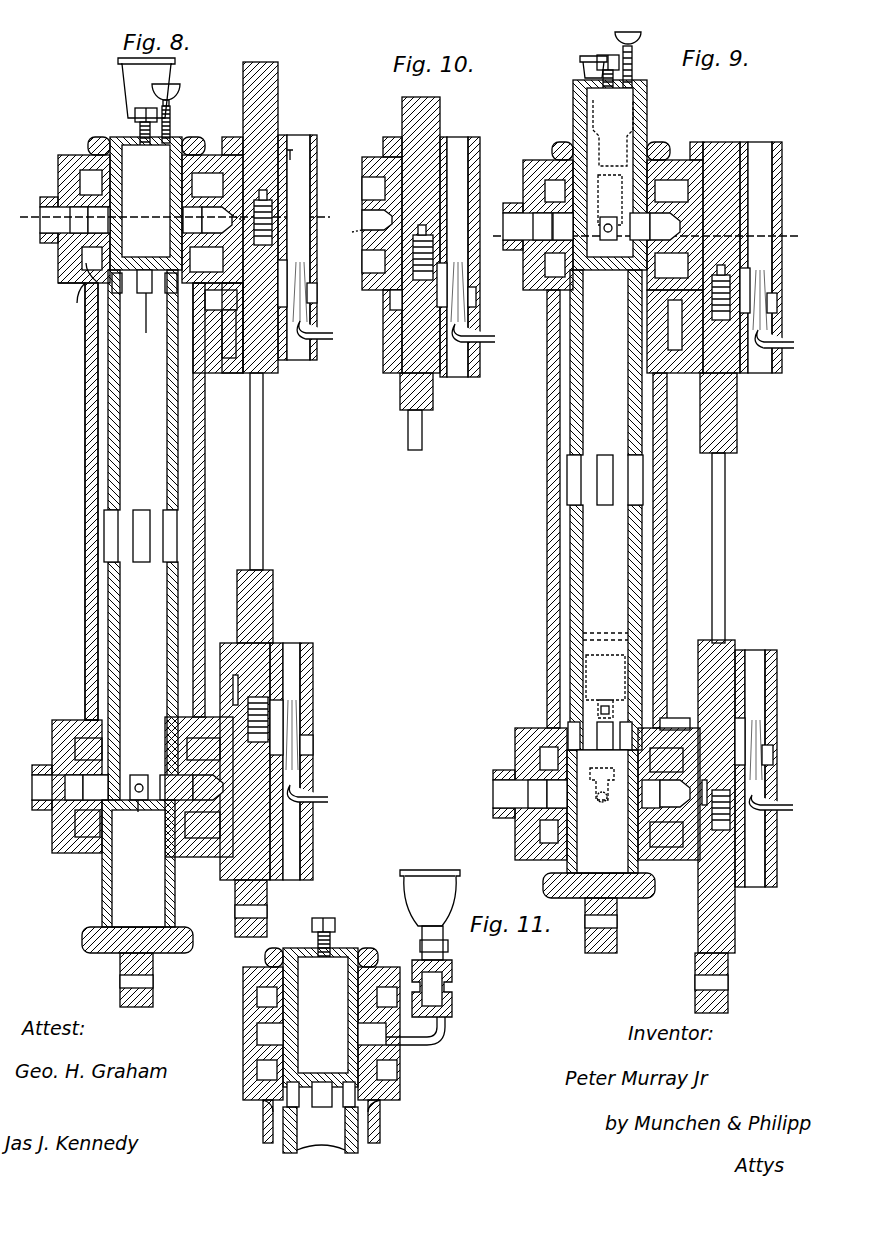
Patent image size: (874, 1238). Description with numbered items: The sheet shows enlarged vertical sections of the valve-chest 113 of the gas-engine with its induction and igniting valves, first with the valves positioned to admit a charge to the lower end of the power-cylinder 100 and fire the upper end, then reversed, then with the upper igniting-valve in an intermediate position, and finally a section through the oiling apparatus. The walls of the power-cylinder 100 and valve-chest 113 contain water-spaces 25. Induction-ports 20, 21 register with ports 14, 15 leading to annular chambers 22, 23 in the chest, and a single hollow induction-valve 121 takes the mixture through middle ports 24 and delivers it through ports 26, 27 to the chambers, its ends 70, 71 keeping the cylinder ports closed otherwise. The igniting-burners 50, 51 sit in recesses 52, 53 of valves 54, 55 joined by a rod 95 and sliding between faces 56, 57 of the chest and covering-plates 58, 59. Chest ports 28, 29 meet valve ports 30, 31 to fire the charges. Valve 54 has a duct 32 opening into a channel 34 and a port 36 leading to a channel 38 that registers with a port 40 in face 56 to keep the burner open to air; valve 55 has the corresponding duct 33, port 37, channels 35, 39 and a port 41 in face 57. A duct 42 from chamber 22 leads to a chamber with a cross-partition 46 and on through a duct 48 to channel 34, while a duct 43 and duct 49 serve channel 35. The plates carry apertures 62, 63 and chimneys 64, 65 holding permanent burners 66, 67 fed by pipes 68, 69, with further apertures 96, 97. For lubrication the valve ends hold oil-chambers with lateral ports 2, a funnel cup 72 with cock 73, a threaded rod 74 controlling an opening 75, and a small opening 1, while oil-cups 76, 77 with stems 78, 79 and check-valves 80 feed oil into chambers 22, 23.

In FIG. 8, the small opening 1 is at (137, 818).
In FIG. 9, the small opening 1 is at (588, 772).
In FIG. 8, the small lateral ports 2 is at (146, 203).
In FIG. 9, the small lateral ports 2 is at (656, 134).
In FIG. 11, the small lateral ports 2 is at (346, 1015).
In FIG. 8, the port 14 is at (79, 220).
In FIG. 9, the port 14 is at (542, 226).
In FIG. 8, the port 15 is at (74, 787).
In FIG. 9, the port 15 is at (537, 794).
In FIG. 8, the induction-port 20 is at (75, 220).
In FIG. 9, the induction-port 20 is at (538, 226).
In FIG. 8, the induction-port 21 is at (70, 786).
In FIG. 9, the induction-port 21 is at (530, 794).
In FIG. 8, the annular chamber 22 is at (145, 220).
In FIG. 9, the annular chamber 22 is at (601, 226).
In FIG. 11, the annular chamber 22 is at (321, 1034).
In FIG. 8, the annular chamber 23 is at (138, 787).
In FIG. 9, the annular chamber 23 is at (604, 794).
In FIG. 8, the ports 24 is at (160, 512).
In FIG. 9, the ports 24 is at (626, 459).
In FIG. 8, the water-spaces 25 is at (149, 504).
In FIG. 10, the water-spaces 25 is at (382, 223).
In FIG. 9, the water-spaces 25 is at (621, 504).
In FIG. 11, the water-spaces 25 is at (321, 1033).
In FIG. 8, the ports 26 is at (159, 305).
In FIG. 9, the ports 26 is at (600, 240).
In FIG. 11, the ports 26 is at (293, 1107).
In FIG. 8, the ports 27 is at (137, 777).
In FIG. 9, the ports 27 is at (600, 736).
In FIG. 8, the port 28 is at (217, 220).
In FIG. 10, the port 28 is at (377, 220).
In FIG. 9, the port 28 is at (665, 226).
In FIG. 8, the port 29 is at (208, 787).
In FIG. 9, the port 29 is at (675, 793).
In FIG. 8, the port 30 is at (300, 245).
In FIG. 10, the port 30 is at (460, 249).
In FIG. 9, the port 30 is at (712, 304).
In FIG. 8, the port 31 is at (245, 710).
In FIG. 9, the port 31 is at (723, 804).
In FIG. 8, the duct 32 is at (300, 192).
In FIG. 10, the duct 32 is at (458, 217).
In FIG. 9, the duct 32 is at (745, 290).
In FIG. 8, the duct 33 is at (230, 765).
In FIG. 9, the duct 33 is at (716, 841).
In FIG. 8, the channel 34 is at (298, 160).
In FIG. 10, the channel 34 is at (423, 198).
In FIG. 9, the channel 34 is at (698, 263).
In FIG. 8, the channel 35 is at (251, 784).
In FIG. 9, the channel 35 is at (708, 863).
In FIG. 8, the port 36 is at (226, 264).
In FIG. 10, the port 36 is at (421, 290).
In FIG. 9, the port 36 is at (675, 331).
In FIG. 8, the port 37 is at (256, 710).
In FIG. 9, the port 37 is at (719, 793).
In FIG. 8, the channel 38 is at (208, 253).
In FIG. 10, the channel 38 is at (397, 296).
In FIG. 9, the channel 38 is at (680, 349).
In FIG. 8, the channel 39 is at (233, 684).
In FIG. 9, the channel 39 is at (708, 772).
In FIG. 8, the port 40 is at (221, 324).
In FIG. 10, the port 40 is at (390, 306).
In FIG. 8, the port 41 is at (245, 718).
In FIG. 9, the port 41 is at (675, 722).
In FIG. 8, the laterally-extending duct 42 is at (211, 227).
In FIG. 10, the laterally-extending duct 42 is at (350, 228).
In FIG. 9, the laterally-extending duct 42 is at (672, 258).
In FIG. 8, the duct 43 is at (202, 818).
In FIG. 9, the duct 43 is at (666, 830).
In FIG. 9, the cross-partition 46 is at (680, 318).
In FIG. 8, the duct 48 is at (234, 208).
In FIG. 10, the duct 48 is at (393, 207).
In FIG. 9, the duct 48 is at (682, 226).
In FIG. 9, the duct 49 is at (688, 778).
In FIG. 8, the igniting-burner 50 is at (272, 230).
In FIG. 10, the igniting-burner 50 is at (423, 252).
In FIG. 8, the igniting-burner 51 is at (258, 727).
In FIG. 9, the igniting-burner 51 is at (723, 793).
In FIG. 8, the recess 52 is at (300, 210).
In FIG. 10, the recess 52 is at (458, 233).
In FIG. 9, the recess 52 is at (737, 424).
In FIG. 8, the recess 53 is at (276, 702).
In FIG. 9, the recess 53 is at (753, 838).
In FIG. 8, the valve 54 is at (278, 92).
In FIG. 10, the valve 54 is at (440, 118).
In FIG. 9, the valve 54 is at (729, 142).
In FIG. 8, the valve 55 is at (273, 580).
In FIG. 9, the valve 55 is at (735, 925).
In FIG. 8, the face 56 is at (230, 151).
In FIG. 10, the face 56 is at (385, 137).
In FIG. 9, the face 56 is at (696, 142).
In FIG. 8, the face 57 is at (225, 643).
In FIG. 9, the face 57 is at (688, 648).
In FIG. 8, the covering-plate 58 is at (282, 135).
In FIG. 10, the covering-plate 58 is at (443, 137).
In FIG. 9, the covering-plate 58 is at (744, 142).
In FIG. 8, the covering-plate 59 is at (278, 643).
In FIG. 9, the covering-plate 59 is at (740, 650).
In FIG. 8, the aperture 62 is at (287, 278).
In FIG. 10, the aperture 62 is at (447, 272).
In FIG. 9, the aperture 62 is at (750, 288).
In FIG. 8, the aperture 63 is at (283, 720).
In FIG. 9, the aperture 63 is at (745, 722).
In FIG. 8, the chimney 64 is at (317, 258).
In FIG. 10, the chimney 64 is at (480, 170).
In FIG. 9, the chimney 64 is at (782, 175).
In FIG. 8, the chimney 65 is at (313, 655).
In FIG. 9, the chimney 65 is at (777, 675).
In FIG. 8, the permanent burner 66 is at (296, 327).
In FIG. 10, the permanent burner 66 is at (455, 332).
In FIG. 9, the permanent burner 66 is at (759, 340).
In FIG. 8, the permanent burner 67 is at (300, 790).
In FIG. 9, the permanent burner 67 is at (753, 819).
In FIG. 8, the pipe 68 is at (328, 331).
In FIG. 10, the pipe 68 is at (486, 332).
In FIG. 9, the pipe 68 is at (790, 339).
In FIG. 8, the pipe 69 is at (326, 813).
In FIG. 9, the pipe 69 is at (772, 765).
In FIG. 8, the end of the valve 70 is at (146, 201).
In FIG. 9, the end of the valve 70 is at (610, 172).
In FIG. 11, the end of the valve 70 is at (323, 1015).
In FIG. 8, the end of the valve 71 is at (167, 822).
In FIG. 9, the end of the valve 71 is at (633, 800).
In FIG. 8, the funnel-shaped cup 72 is at (180, 86).
In FIG. 9, the funnel-shaped cup 72 is at (641, 36).
In FIG. 8, the cock 73 is at (170, 112).
In FIG. 9, the cock 73 is at (632, 60).
In FIG. 8, the threaded rod 74 is at (147, 162).
In FIG. 9, the threaded rod 74 is at (606, 55).
In FIG. 11, the threaded rod 74 is at (335, 930).
In FIG. 8, the opening 75 is at (161, 247).
In FIG. 9, the opening 75 is at (610, 197).
In FIG. 11, the opening 75 is at (320, 1068).
In FIG. 8, the oil-cup 76 is at (146, 88).
In FIG. 9, the oil-cup 76 is at (591, 61).
In FIG. 11, the oil-cup 76 is at (430, 898).
In FIG. 9, the oil-cup 77 is at (588, 673).
In FIG. 8, the stem 78 is at (130, 221).
In FIG. 9, the stem 78 is at (608, 233).
In FIG. 11, the stem 78 is at (440, 1042).
In FIG. 8, the stem 79 is at (142, 784).
In FIG. 9, the stem 79 is at (602, 803).
In FIG. 11, the check-valve 80 is at (452, 985).
In FIG. 8, the rod 95 is at (263, 490).
In FIG. 10, the rod 95 is at (422, 437).
In FIG. 9, the rod 95 is at (725, 532).
In FIG. 8, the aperture 96 is at (317, 293).
In FIG. 10, the aperture 96 is at (476, 295).
In FIG. 9, the aperture 96 is at (777, 305).
In FIG. 8, the aperture 97 is at (313, 746).
In FIG. 9, the aperture 97 is at (773, 750).
In FIG. 8, the power-cylinder 100 is at (58, 190).
In FIG. 9, the power-cylinder 100 is at (529, 154).
In FIG. 8, the valve-chest 113 is at (205, 493).
In FIG. 9, the valve-chest 113 is at (547, 443).
In FIG. 11, the valve-chest 113 is at (380, 1125).
In FIG. 8, the induction-valve 121 is at (103, 960).
In FIG. 9, the induction-valve 121 is at (606, 510).
In FIG. 11, the induction-valve 121 is at (358, 1152).